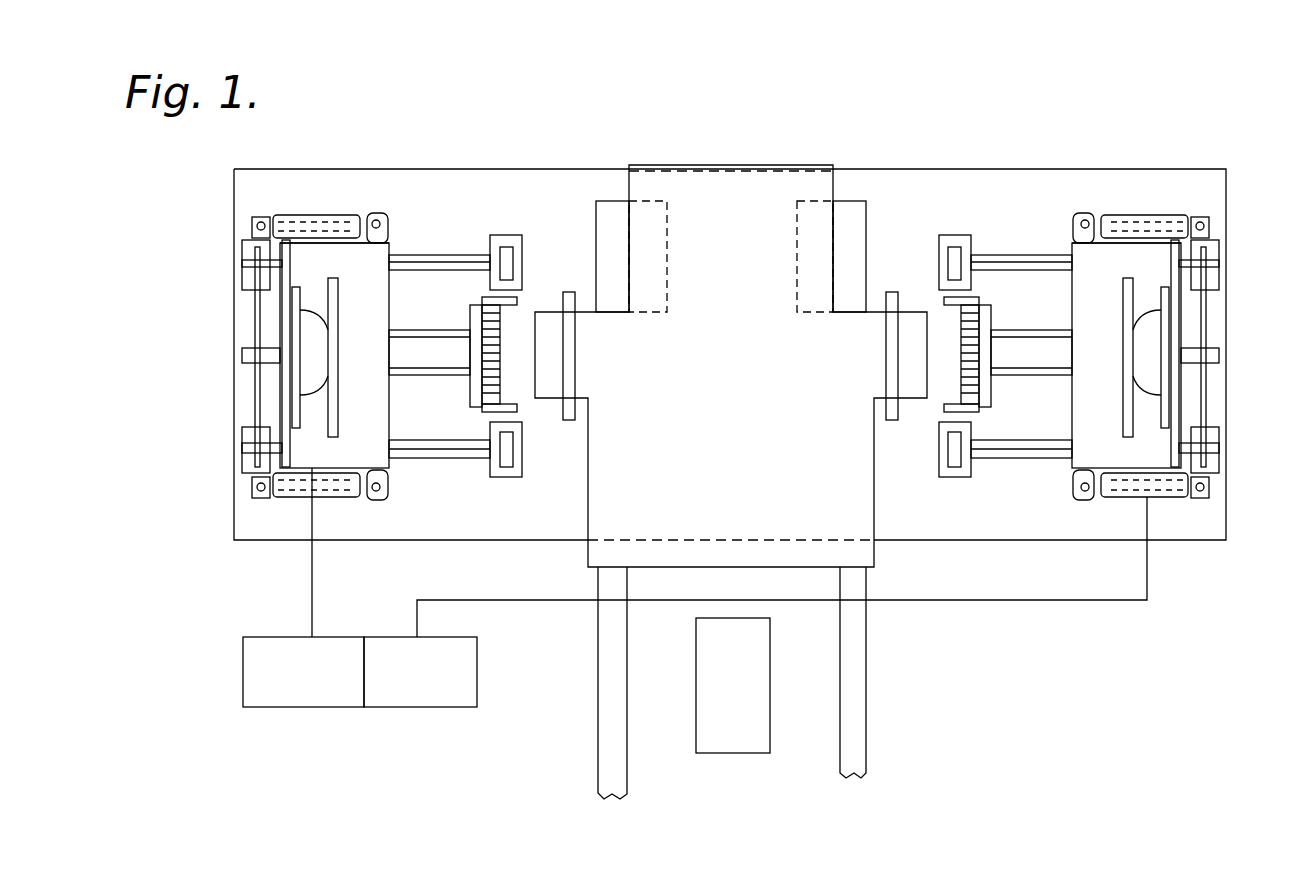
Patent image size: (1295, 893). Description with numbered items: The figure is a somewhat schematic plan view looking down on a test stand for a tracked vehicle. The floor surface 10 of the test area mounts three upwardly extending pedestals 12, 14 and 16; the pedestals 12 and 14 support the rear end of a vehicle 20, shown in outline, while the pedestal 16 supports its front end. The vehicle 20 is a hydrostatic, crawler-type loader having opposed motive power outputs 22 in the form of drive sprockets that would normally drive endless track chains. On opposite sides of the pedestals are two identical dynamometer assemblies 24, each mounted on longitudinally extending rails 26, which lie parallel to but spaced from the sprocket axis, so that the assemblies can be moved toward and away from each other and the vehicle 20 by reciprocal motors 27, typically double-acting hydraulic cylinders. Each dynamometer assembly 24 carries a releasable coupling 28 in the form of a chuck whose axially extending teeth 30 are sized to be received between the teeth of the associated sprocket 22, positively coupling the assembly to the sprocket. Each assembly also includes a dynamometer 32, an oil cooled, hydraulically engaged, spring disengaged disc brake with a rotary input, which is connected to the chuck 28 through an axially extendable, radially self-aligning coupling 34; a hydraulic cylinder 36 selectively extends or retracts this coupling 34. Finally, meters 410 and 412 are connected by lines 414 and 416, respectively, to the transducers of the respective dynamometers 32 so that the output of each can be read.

The floor surface 10 is at (1052, 186).
The pedestal 12 is at (604, 216).
The pedestal 14 is at (862, 234).
The pedestal 16 is at (738, 754).
The vehicle 20 is at (590, 548).
The motive power outputs 22 is at (570, 422).
The dynamometer assembly 24 is at (394, 244).
The rails 26 is at (442, 258).
The reciprocal motor 27 is at (322, 228).
The releasable coupling 28 is at (478, 402).
The teeth 30 is at (517, 301).
The dynamometer 32 is at (366, 327).
The coupling 34 is at (410, 368).
The hydraulic cylinder 36 is at (246, 366).
The meter 410 is at (320, 707).
The meter 412 is at (440, 707).
The line 414 is at (311, 593).
The line 416 is at (526, 606).